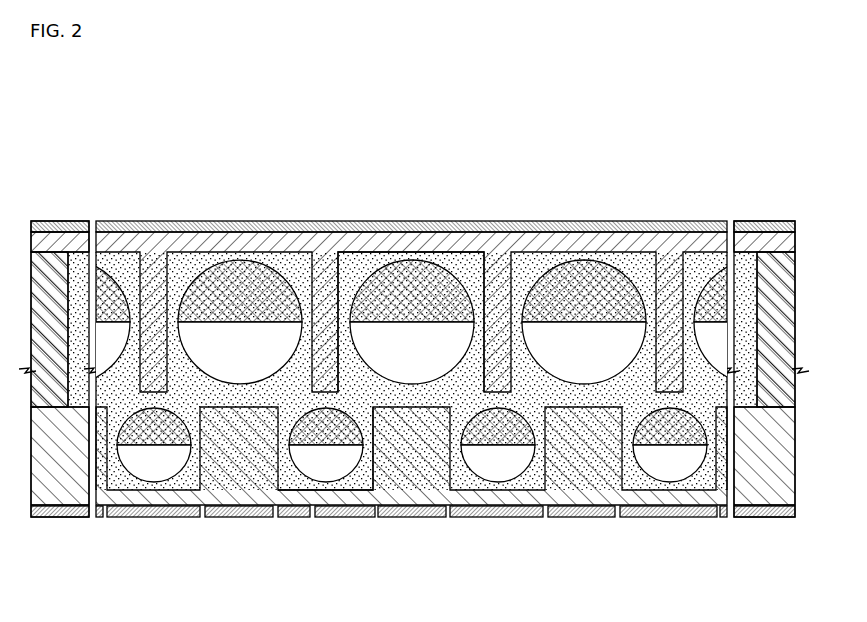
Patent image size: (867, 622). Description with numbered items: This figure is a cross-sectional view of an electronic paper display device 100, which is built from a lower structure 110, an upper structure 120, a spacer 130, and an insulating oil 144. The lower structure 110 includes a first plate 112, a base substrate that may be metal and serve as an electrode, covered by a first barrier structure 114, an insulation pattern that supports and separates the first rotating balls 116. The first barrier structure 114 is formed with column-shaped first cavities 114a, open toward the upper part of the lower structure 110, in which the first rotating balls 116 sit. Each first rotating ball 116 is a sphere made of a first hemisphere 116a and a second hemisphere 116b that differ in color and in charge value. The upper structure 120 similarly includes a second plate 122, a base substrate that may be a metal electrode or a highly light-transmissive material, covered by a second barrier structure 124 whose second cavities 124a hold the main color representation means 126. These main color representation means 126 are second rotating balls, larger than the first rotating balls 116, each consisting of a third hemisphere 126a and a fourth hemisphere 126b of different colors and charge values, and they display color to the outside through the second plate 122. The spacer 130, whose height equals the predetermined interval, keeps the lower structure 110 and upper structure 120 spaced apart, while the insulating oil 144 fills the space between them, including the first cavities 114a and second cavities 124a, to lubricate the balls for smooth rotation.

The electronic paper display device 100 is at (68, 80).
The lower structure 110 is at (146, 526).
The first plate 112 is at (578, 510).
The first barrier structure 114 is at (495, 495).
The first cavities 114a is at (367, 465).
The first rotating balls 116 is at (412, 511).
The first hemisphere 116a is at (313, 433).
The second hemisphere 116b is at (337, 462).
The upper structure 120 is at (146, 213).
The second plate 122 is at (565, 226).
The second barrier structure 124 is at (498, 227).
The second cavities 124a is at (344, 272).
The main color representation means 126 is at (412, 256).
The third hemisphere 126a is at (215, 287).
The fourth hemisphere 126b is at (272, 337).
The spacer 130 is at (49, 221).
The insulating oil 144 is at (633, 262).